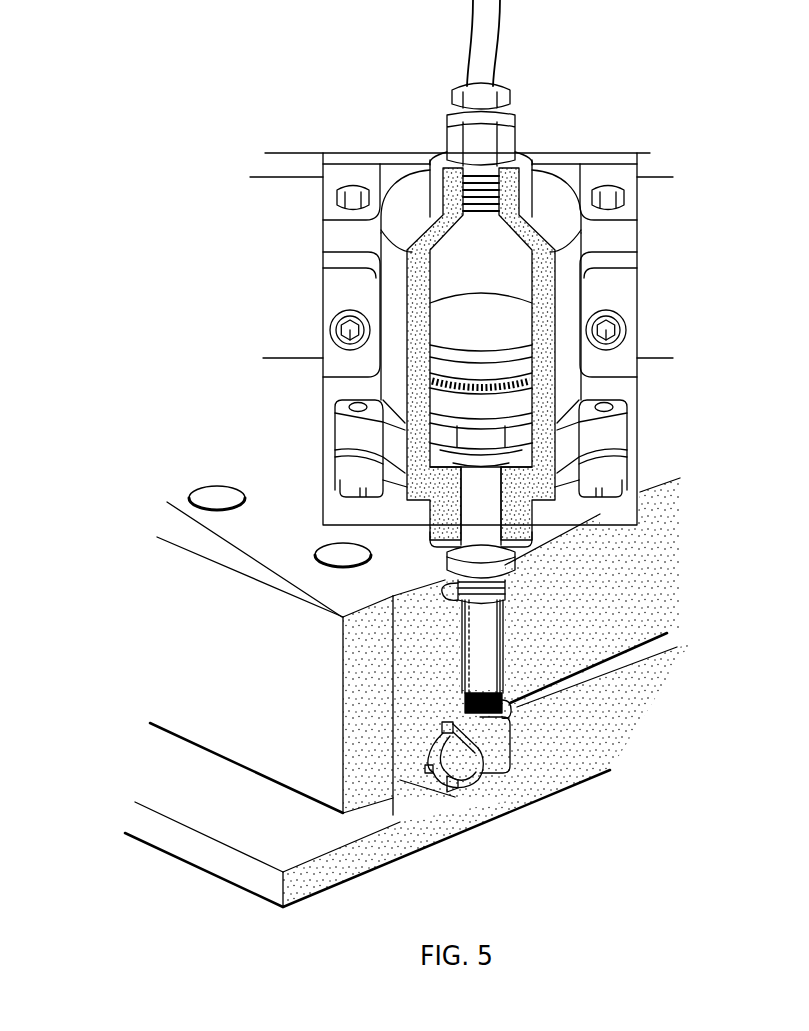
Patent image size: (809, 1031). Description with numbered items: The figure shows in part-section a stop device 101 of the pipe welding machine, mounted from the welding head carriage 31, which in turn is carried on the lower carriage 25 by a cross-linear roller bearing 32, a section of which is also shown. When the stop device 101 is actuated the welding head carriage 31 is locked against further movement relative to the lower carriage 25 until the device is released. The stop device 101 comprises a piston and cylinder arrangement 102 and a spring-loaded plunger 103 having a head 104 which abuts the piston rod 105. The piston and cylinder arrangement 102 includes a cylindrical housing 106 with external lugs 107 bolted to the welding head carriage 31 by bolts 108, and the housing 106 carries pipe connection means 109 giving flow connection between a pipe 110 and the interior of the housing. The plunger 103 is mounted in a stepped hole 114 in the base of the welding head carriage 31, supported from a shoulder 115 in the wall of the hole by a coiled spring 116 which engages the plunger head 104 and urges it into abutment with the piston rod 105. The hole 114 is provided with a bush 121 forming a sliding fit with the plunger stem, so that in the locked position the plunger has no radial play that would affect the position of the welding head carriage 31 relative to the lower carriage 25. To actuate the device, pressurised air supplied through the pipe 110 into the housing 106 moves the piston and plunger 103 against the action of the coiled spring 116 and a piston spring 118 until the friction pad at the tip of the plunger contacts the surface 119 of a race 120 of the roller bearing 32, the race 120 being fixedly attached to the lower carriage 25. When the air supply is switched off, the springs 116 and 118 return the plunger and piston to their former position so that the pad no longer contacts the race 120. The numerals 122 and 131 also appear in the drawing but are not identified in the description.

The lower carriage 25 is at (562, 777).
The welding head carriage 31 is at (225, 440).
The cross-linear roller bearing 32 is at (482, 782).
The stop device 101 is at (577, 296).
The piston and cylinder arrangement 102 is at (503, 331).
The spring-loaded plunger 103 is at (482, 633).
The plunger head 104 is at (447, 553).
The piston rod 105 is at (470, 538).
The cylindrical housing 106 is at (540, 265).
The external lugs 107 is at (333, 298).
The bolts 108 is at (340, 330).
The pipe connection means 109 is at (455, 133).
The pipe 110 is at (483, 24).
The stepped hole 114 is at (504, 655).
The shoulder 115 is at (432, 578).
The coiled spring 116 is at (507, 596).
The piston spring 118 is at (513, 445).
The surface 119 is at (507, 712).
The race 120 is at (511, 748).
The bush 121 is at (463, 650).
The stem core 122 is at (477, 672).
The sealing band 131 is at (465, 706).